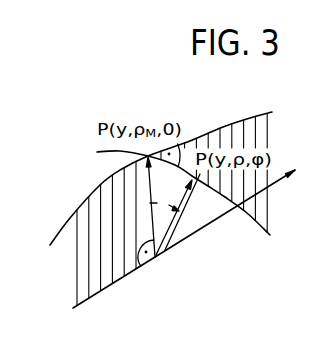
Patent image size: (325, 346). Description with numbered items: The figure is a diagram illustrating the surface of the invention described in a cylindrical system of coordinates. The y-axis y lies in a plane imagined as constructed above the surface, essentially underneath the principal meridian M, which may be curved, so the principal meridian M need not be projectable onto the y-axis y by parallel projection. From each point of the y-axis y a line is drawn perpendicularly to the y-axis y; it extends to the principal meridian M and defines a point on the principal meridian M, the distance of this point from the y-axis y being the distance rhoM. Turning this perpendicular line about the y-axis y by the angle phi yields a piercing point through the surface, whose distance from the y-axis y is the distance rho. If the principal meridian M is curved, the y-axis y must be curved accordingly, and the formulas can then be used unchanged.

The principal meridian M is at (153, 188).
The y-axis y is at (191, 234).
The distance ρM rhoM is at (157, 207).
The distance ρ rho is at (178, 214).
The angle φ phi is at (164, 207).